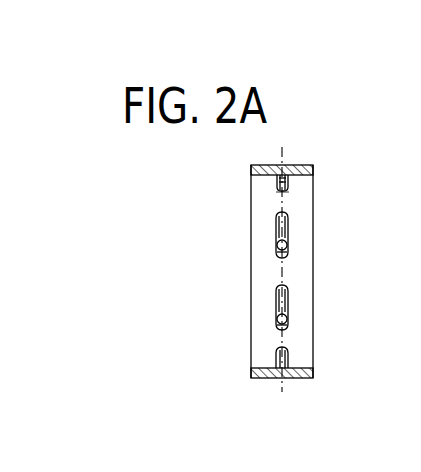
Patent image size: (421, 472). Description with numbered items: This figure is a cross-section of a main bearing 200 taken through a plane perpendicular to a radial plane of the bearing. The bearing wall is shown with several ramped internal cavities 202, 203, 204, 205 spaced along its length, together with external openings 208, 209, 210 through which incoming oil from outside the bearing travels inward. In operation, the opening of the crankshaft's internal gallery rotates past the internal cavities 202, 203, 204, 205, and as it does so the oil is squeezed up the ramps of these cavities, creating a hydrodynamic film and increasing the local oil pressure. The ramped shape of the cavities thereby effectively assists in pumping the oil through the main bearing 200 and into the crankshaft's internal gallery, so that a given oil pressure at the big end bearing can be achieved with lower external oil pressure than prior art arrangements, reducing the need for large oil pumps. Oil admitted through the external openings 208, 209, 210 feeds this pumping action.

The main bearing 200 is at (327, 293).
The ramped internal cavity 202 is at (278, 192).
The ramped internal cavity 203 is at (275, 243).
The ramped internal cavity 204 is at (276, 316).
The ramped internal cavity 205 is at (289, 359).
The external opening 208 is at (301, 166).
The external opening 209 is at (289, 240).
The external opening 210 is at (290, 327).